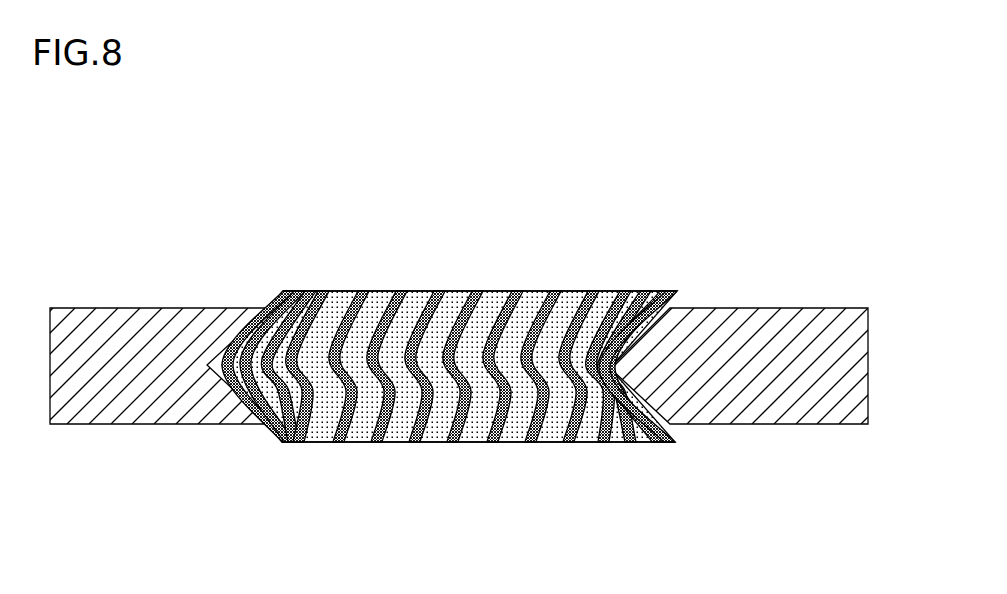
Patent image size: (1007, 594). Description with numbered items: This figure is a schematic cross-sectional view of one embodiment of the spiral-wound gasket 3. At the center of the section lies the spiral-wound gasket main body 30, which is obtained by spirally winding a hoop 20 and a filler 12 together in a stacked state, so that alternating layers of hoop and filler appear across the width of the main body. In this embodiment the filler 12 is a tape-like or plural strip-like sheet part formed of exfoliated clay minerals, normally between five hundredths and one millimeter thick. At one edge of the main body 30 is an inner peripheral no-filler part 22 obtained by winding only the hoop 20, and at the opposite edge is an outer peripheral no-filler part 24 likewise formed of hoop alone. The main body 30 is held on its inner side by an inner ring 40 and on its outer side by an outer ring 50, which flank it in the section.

The spiral-wound gasket 3 is at (700, 188).
The filler 12 is at (382, 442).
The hoop 20 is at (588, 442).
The inner peripheral no-filler part 22 is at (645, 291).
The outer peripheral no-filler part 24 is at (307, 291).
The spiral-wound gasket main body 30 is at (607, 531).
The inner ring 40 is at (753, 424).
The outer ring 50 is at (140, 424).